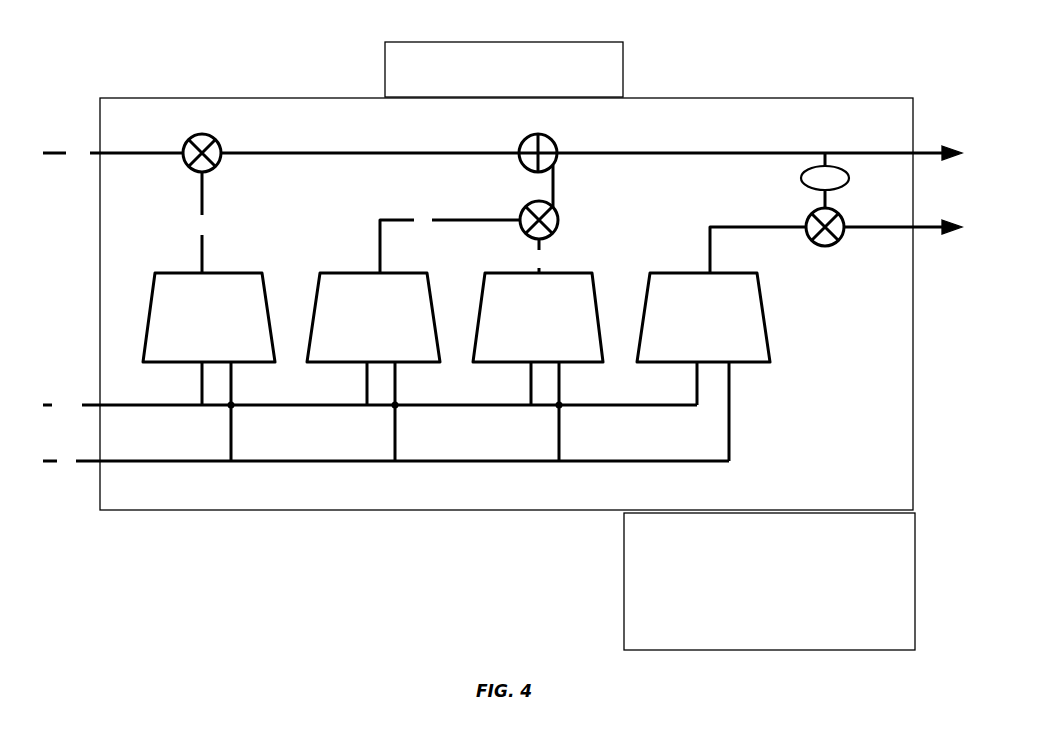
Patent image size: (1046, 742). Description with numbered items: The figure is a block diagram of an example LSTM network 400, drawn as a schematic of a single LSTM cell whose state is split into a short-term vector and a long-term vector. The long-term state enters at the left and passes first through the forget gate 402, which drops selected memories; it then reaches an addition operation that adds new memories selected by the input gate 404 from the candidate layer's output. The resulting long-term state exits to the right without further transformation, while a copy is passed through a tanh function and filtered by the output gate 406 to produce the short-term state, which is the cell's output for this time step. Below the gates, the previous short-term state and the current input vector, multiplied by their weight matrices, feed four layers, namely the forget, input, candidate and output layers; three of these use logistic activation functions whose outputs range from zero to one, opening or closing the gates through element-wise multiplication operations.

The example LSTM network 400 is at (502, 346).
The forget gate 402 is at (204, 144).
The input gate 404 is at (507, 220).
The output gate 406 is at (794, 234).